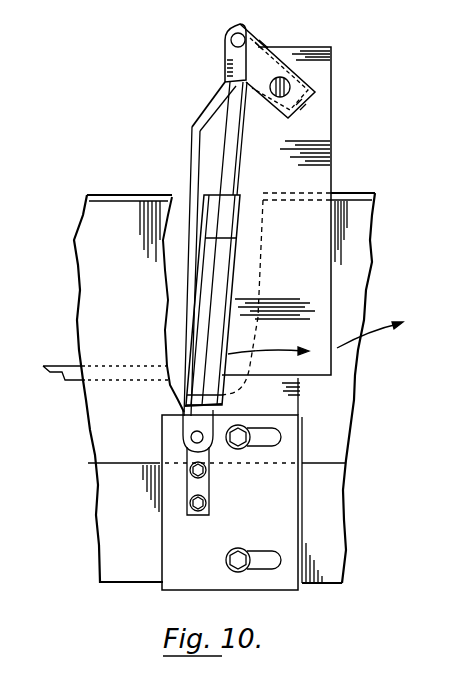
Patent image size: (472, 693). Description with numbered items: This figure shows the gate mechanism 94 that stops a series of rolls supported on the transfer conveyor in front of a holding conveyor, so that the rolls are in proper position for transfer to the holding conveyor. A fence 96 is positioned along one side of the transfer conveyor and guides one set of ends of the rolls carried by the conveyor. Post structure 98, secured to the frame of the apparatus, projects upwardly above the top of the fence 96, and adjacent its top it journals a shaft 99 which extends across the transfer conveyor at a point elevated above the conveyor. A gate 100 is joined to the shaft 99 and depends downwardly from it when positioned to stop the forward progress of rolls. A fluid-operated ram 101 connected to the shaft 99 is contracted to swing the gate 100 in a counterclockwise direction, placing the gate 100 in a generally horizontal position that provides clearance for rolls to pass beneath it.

The gate mechanism 94 is at (257, 220).
The fence 96 is at (122, 212).
The post structure 98 is at (290, 364).
The shaft 99 is at (284, 76).
The gate 100 is at (194, 176).
The fluid-operated ram 101 is at (228, 282).